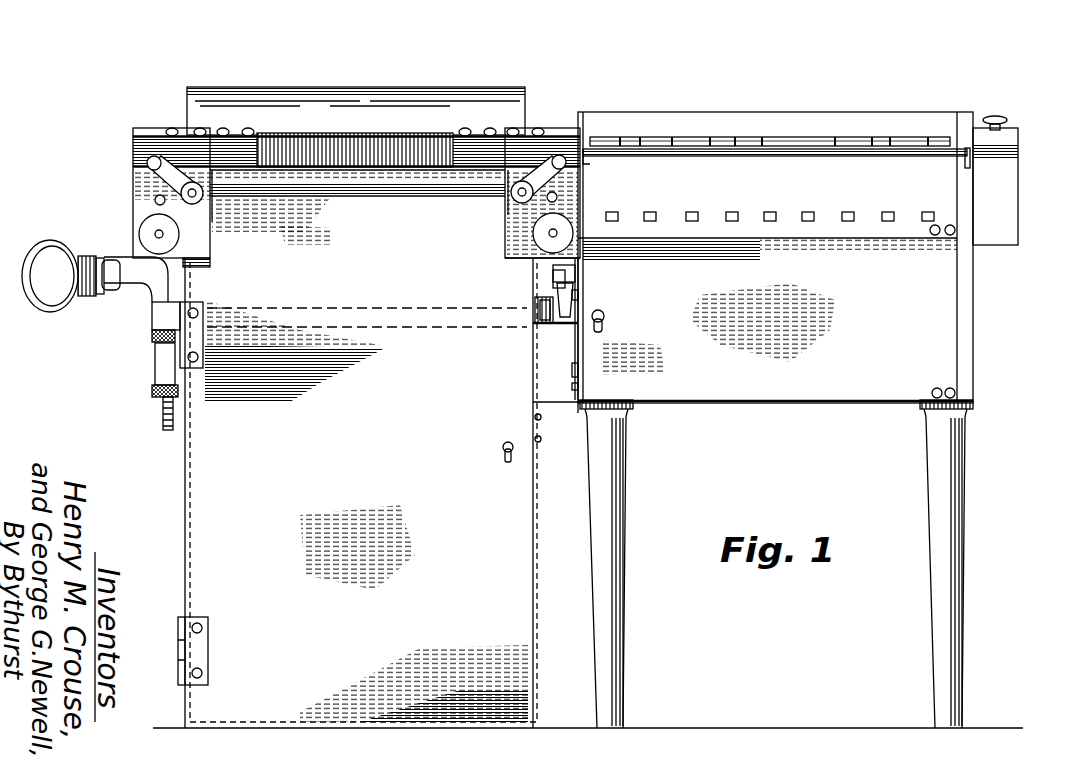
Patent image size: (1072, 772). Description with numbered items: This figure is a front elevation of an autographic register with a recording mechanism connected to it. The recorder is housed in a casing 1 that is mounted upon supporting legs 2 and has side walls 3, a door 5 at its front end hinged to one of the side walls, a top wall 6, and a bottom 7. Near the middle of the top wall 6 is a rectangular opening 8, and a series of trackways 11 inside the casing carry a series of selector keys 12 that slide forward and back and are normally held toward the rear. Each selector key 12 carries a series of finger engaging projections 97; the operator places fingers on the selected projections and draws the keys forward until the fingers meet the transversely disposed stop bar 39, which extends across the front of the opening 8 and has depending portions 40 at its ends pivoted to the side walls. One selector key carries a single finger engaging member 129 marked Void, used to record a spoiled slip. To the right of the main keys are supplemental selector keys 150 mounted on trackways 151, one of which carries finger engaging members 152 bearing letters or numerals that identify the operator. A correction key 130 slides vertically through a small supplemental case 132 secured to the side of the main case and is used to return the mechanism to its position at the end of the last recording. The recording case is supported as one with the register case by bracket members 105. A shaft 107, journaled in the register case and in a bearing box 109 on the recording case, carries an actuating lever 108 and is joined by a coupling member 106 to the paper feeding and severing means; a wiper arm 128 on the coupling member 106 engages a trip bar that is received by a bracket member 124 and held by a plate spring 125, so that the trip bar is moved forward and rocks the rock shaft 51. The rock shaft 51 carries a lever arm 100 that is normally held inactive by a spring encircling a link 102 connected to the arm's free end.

The casing 1 is at (975, 363).
The supporting legs 2 is at (620, 528).
The side walls 3 is at (973, 318).
The door 5 is at (942, 292).
The top wall 6 is at (805, 118).
The bottom 7 is at (768, 405).
The rectangular opening 8 is at (597, 138).
The trackways 11 is at (770, 222).
The selector keys 12 is at (710, 140).
The stop bar 39 is at (945, 155).
The depending portions 40 is at (577, 162).
The rock shaft 51 is at (557, 280).
The finger engaging projections 97 is at (762, 140).
The lever arm 100 is at (535, 320).
The link 102 is at (540, 302).
The bracket members 105 is at (552, 257).
The coupling member 106 is at (548, 330).
The shaft 107 is at (145, 330).
The actuating lever 108 is at (103, 320).
The bearing box 109 is at (572, 326).
The bracket member 124 is at (567, 270).
The plate spring 125 is at (535, 312).
The wiper arm 128 is at (560, 325).
The finger engaging member 129 is at (642, 139).
The correction key 130 is at (995, 115).
The supplemental case 132 is at (1015, 135).
The supplemental selector keys 150 is at (872, 140).
The trackways 151 is at (928, 222).
The finger engaging members 152 is at (928, 140).